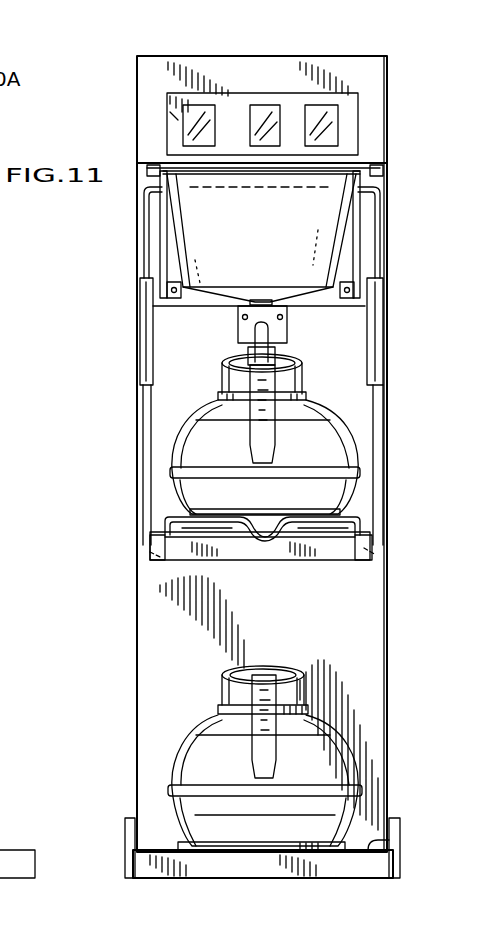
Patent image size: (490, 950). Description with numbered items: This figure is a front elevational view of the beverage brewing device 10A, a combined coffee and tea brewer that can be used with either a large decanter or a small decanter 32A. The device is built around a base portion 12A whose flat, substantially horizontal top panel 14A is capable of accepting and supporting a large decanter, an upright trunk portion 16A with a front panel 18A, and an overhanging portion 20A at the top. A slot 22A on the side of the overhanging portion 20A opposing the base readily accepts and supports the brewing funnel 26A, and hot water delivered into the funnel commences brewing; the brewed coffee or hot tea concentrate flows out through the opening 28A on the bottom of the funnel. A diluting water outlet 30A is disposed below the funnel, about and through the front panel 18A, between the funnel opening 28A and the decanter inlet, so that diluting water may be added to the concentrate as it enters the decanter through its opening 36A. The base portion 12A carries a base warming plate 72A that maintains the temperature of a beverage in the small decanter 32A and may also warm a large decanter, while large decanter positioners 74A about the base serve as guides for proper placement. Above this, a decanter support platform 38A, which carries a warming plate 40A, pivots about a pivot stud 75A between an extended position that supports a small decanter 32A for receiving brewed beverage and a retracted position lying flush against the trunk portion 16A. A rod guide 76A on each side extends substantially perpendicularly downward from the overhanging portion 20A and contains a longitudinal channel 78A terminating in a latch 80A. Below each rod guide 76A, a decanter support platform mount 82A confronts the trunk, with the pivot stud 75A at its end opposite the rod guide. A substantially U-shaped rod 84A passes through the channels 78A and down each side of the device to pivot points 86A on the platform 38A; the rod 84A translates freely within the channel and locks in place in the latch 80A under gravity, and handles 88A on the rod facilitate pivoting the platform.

The beverage brewing device 10A is at (412, 147).
The base portion 12A is at (393, 878).
The top panel 14A is at (390, 845).
The trunk portion 16A is at (388, 605).
The front panel 18A is at (282, 611).
The overhanging portion 20A is at (137, 125).
The slot 22A is at (140, 168).
The brewing funnel 26A is at (340, 255).
The opening 28A is at (237, 304).
The diluting water outlet 30A is at (270, 330).
The small decanter 32A is at (172, 448).
The opening 36A is at (228, 354).
The decanter support platform 38A is at (170, 578).
The warming plate 40A is at (368, 517).
The base warming plate 72A is at (172, 830).
The large decanter positioners 74A is at (128, 822).
The pivot stud 75A is at (150, 552).
The rod guide 76A is at (163, 244).
The channel 78A is at (158, 263).
The latch 80A is at (146, 205).
The decanter support platform mount 82A is at (160, 492).
The rod 84A is at (380, 450).
The pivot points 86A is at (152, 540).
The handles 88A is at (140, 335).